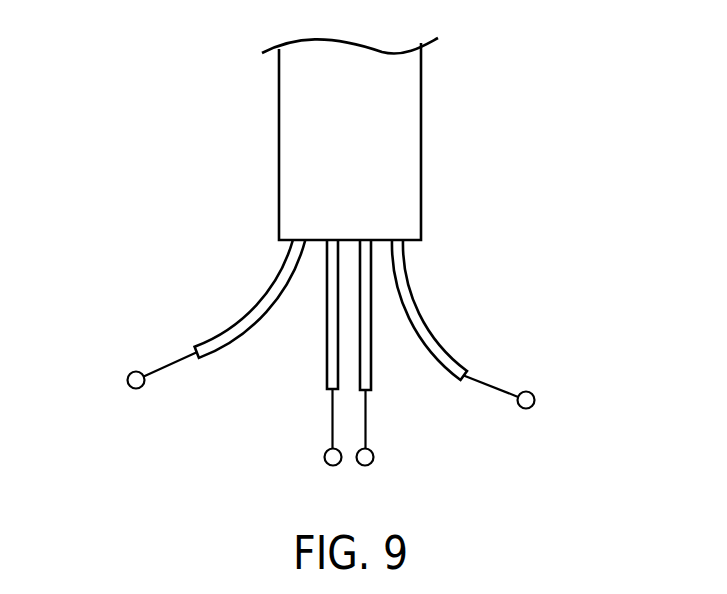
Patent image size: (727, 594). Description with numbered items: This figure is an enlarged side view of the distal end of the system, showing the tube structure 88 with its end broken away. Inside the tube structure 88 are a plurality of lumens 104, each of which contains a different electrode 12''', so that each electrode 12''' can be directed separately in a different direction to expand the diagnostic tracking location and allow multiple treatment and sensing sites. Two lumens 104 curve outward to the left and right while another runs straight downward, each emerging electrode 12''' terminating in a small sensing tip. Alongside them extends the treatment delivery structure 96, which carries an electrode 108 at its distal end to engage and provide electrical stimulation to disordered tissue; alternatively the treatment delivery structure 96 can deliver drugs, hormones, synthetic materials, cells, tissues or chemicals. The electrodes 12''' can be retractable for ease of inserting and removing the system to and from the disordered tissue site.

The tube structure 88 is at (422, 133).
The lumen 104 is at (237, 317).
The treatment delivery structure 96 is at (327, 375).
The electrode 108 is at (324, 461).
The electrode 12''' is at (327, 427).